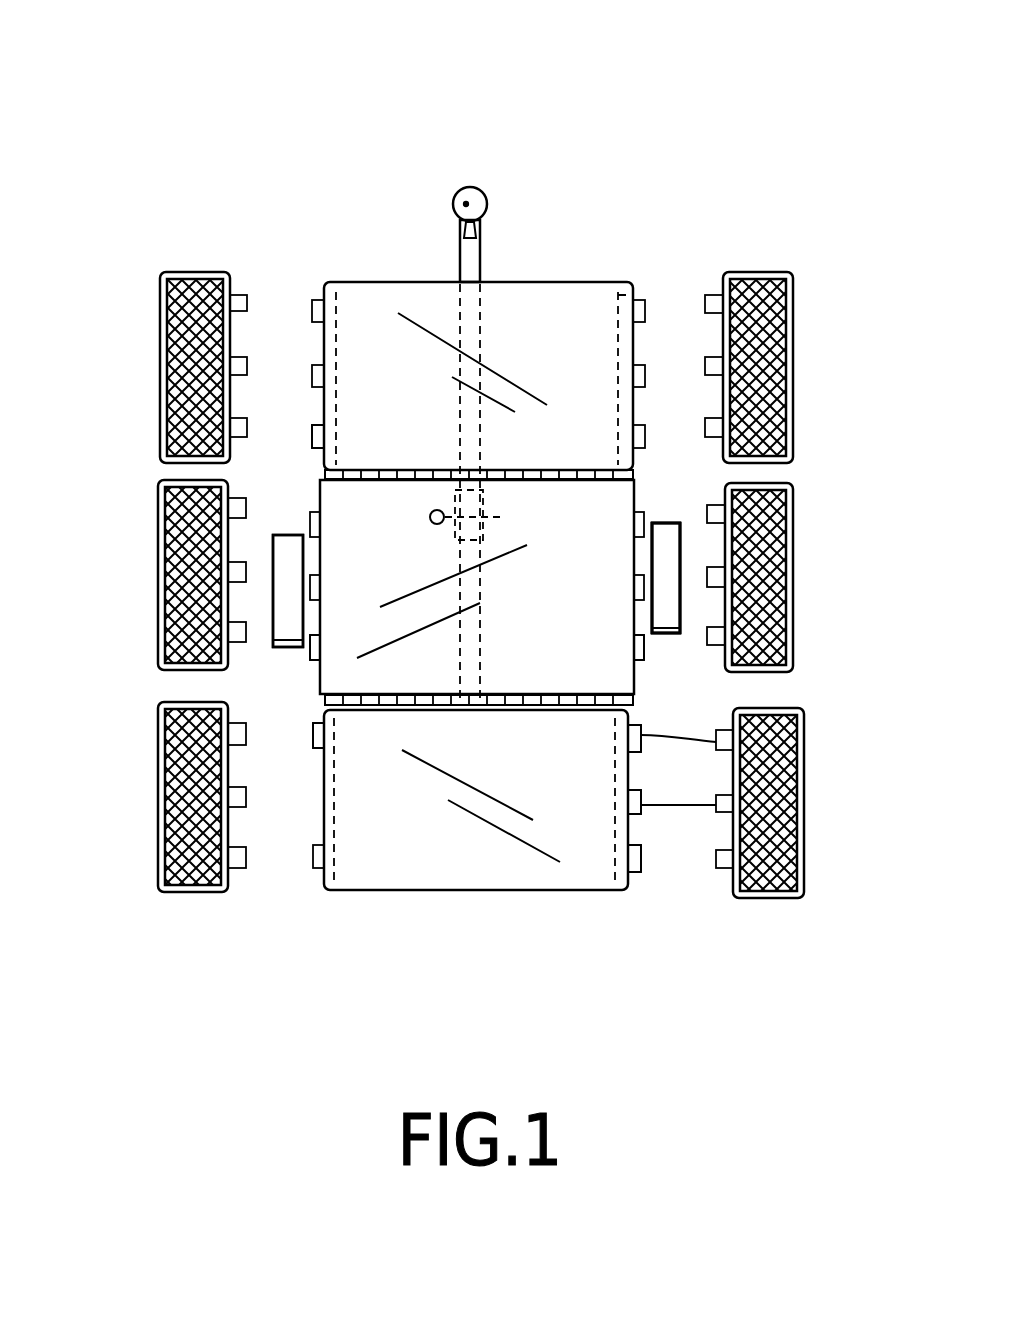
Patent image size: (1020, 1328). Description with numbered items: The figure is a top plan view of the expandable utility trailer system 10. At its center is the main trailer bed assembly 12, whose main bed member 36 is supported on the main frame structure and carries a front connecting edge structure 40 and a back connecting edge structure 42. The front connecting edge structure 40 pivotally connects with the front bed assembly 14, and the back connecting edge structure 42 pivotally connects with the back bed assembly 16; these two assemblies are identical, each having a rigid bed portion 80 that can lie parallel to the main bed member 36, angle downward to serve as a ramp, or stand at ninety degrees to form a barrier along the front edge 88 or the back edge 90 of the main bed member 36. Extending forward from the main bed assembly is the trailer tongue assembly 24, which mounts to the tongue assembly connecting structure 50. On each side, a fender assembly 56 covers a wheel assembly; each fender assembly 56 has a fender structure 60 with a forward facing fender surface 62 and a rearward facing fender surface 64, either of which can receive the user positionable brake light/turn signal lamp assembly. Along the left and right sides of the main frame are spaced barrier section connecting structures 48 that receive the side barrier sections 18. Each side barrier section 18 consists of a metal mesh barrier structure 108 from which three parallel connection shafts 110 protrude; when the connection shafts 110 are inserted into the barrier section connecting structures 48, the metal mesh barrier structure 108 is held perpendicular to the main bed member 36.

The expandable utility trailer system 10 is at (651, 138).
The main trailer bed assembly 12 is at (492, 590).
The front bed assembly 14 is at (365, 252).
The back bed assembly 16 is at (432, 905).
The side barrier section 18 is at (762, 912).
The trailer tongue assembly 24 is at (494, 230).
The main bed member 36 is at (412, 656).
The front connecting edge structure 40 is at (583, 458).
The back connecting edge structure 42 is at (508, 718).
The barrier section connecting structures 48 is at (320, 520).
The tongue assembly connecting structure 50 is at (332, 573).
The fender assembly 56 is at (258, 550).
The fender structure 60 is at (288, 593).
The forward facing fender surface 62 is at (668, 523).
The rearward facing fender surface 64 is at (665, 633).
The rigid bed portion 80 is at (375, 318).
The front edge 88 is at (497, 483).
The back edge 90 is at (340, 673).
The metal mesh barrier structure 108 is at (775, 852).
The connection shafts 110 is at (628, 727).